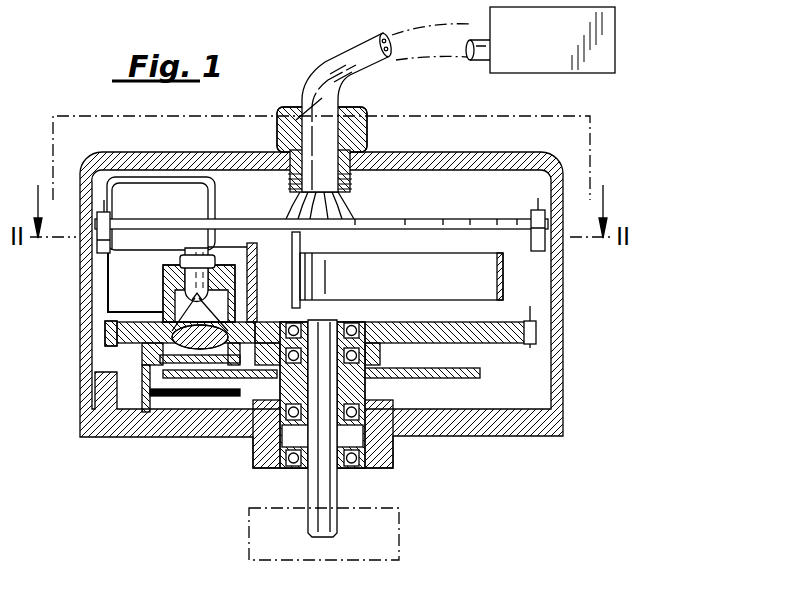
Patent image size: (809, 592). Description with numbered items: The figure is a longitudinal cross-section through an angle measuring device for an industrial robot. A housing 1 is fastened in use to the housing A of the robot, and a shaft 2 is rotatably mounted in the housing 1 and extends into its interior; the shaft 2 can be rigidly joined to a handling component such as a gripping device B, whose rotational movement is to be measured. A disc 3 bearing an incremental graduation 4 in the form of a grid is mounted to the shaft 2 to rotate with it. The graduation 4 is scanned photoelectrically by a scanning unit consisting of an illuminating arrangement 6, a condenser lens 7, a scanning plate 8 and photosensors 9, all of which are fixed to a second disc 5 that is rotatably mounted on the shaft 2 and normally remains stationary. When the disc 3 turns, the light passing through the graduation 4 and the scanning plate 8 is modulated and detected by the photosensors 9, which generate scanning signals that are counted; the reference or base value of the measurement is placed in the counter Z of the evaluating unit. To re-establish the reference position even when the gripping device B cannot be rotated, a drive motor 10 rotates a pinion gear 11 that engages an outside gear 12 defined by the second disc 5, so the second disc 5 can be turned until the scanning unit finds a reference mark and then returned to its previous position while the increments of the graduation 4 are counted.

The housing 1 is at (544, 148).
The shaft 2 is at (316, 489).
The disc 3 is at (197, 396).
The incremental graduation 4 is at (465, 372).
The second disc 5 is at (110, 326).
The illuminating arrangement 6 is at (184, 258).
The condenser lens 7 is at (178, 330).
The scanning plate 8 is at (143, 366).
The photosensors 9 is at (165, 396).
The drive motor 10 is at (216, 195).
The pinion gear 11 is at (136, 318).
The outside gear 12 is at (108, 336).
The housing of an industrial robot A is at (590, 142).
The gripping device B is at (400, 540).
The counter Z is at (612, 40).